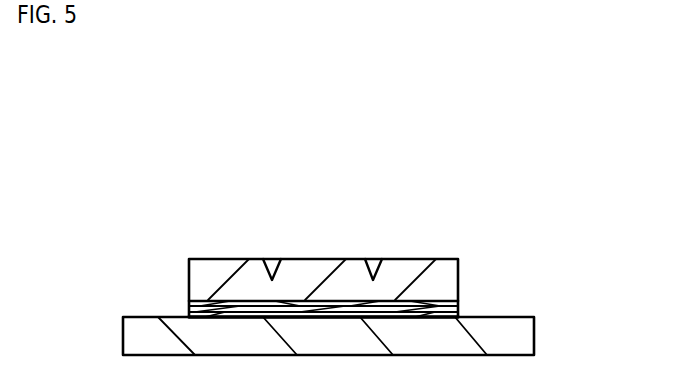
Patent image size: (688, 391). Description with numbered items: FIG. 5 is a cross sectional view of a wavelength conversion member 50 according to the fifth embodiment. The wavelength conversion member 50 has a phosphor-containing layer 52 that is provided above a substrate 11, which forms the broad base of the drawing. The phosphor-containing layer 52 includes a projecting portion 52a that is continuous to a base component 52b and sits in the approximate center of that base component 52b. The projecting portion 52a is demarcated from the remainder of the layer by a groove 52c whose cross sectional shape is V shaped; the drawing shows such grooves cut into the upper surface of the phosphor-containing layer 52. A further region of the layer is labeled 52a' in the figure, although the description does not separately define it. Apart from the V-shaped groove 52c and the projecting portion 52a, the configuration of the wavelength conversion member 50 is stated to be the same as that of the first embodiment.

The substrate 11 is at (152, 328).
The wavelength conversion member 50 is at (563, 278).
The phosphor-containing layer 52 is at (503, 157).
The projecting portion 52a is at (277, 235).
The base component 52b is at (397, 288).
The first region of wavelength conversion member 52a' is at (473, 219).
The groove 52c is at (272, 252).